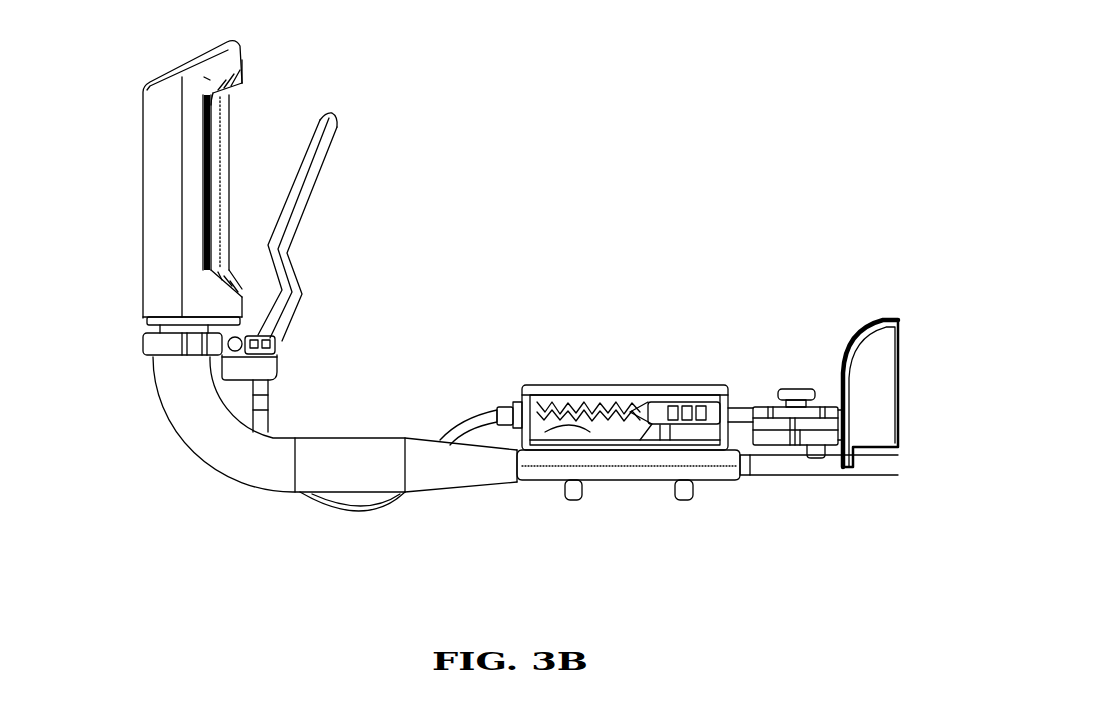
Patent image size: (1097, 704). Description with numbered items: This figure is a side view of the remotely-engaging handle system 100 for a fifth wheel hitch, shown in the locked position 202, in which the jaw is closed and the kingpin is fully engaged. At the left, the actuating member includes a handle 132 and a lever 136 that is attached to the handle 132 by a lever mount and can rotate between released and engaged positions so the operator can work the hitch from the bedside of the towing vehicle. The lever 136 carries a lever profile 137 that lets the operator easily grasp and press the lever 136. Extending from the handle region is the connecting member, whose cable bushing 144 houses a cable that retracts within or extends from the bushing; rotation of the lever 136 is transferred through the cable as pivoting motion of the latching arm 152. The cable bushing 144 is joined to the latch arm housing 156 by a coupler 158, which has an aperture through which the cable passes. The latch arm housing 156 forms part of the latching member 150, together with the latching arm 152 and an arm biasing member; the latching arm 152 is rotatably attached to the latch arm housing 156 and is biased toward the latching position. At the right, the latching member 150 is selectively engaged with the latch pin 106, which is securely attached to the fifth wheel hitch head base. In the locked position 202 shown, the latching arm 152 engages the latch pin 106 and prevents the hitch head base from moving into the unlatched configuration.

The remotely-engaging handle system 100 is at (198, 547).
The latch pin 106 is at (800, 387).
The handle 132 is at (153, 72).
The lever 136 is at (327, 120).
The lever profile 137 is at (213, 88).
The cable bushing 144 is at (440, 432).
The latching member 150 is at (590, 277).
The latching arm 152 is at (757, 407).
The latch arm housing 156 is at (600, 385).
The coupler 158 is at (516, 408).
The locked position 202 is at (878, 132).